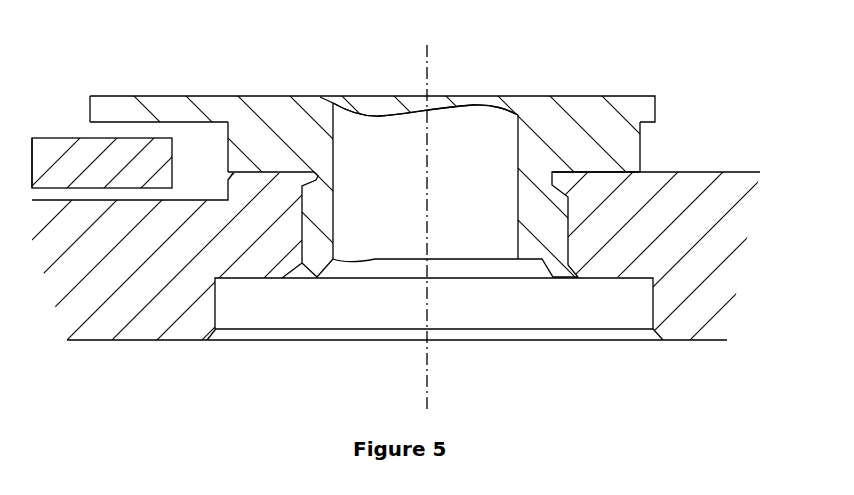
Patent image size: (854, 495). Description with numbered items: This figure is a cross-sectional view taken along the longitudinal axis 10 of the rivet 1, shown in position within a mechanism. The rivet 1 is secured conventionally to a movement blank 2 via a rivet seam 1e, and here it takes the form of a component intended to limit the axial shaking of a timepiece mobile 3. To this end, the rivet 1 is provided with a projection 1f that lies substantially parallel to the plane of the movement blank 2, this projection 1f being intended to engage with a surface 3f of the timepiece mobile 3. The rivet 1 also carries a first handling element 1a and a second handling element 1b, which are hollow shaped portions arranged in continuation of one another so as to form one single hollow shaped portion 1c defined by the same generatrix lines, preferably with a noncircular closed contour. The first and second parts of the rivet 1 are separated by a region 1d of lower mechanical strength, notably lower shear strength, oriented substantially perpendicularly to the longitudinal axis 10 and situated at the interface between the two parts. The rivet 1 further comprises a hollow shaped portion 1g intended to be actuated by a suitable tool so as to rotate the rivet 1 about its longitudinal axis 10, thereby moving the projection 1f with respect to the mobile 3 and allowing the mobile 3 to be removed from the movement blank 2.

The rivet 1 is at (602, 120).
The first handling element 1a is at (360, 130).
The hollow shaped portion 1g is at (360, 130).
The second handling element 1b is at (482, 251).
The single hollow shaped portion 1c is at (476, 141).
The region of lower mechanical strength 1d is at (297, 192).
The rivet seam 1e is at (275, 294).
The projection 1f is at (145, 97).
The movement blank 2 is at (737, 188).
The timepiece mobile 3 is at (145, 160).
The surface 3f is at (61, 142).
The longitudinal axis 10 is at (416, 368).